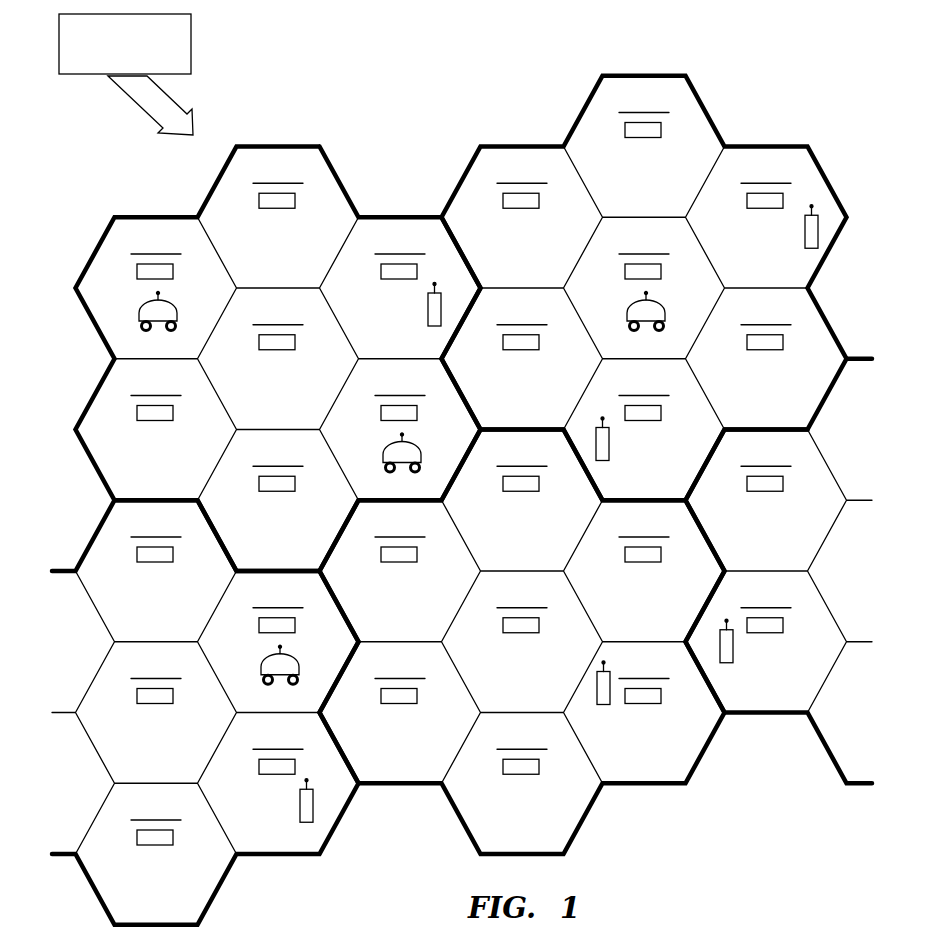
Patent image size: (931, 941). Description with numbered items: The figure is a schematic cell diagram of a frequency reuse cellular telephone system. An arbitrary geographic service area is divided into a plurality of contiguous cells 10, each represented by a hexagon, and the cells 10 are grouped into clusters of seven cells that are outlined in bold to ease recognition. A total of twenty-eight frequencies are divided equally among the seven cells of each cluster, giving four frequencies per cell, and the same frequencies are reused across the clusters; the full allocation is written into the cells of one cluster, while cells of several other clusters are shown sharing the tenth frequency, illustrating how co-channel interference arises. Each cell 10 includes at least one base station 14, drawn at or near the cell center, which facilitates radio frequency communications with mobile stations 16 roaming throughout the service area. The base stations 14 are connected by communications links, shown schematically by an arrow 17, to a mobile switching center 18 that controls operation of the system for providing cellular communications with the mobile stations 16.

The cell 10 is at (99, 276).
The base station 14 is at (767, 940).
The mobile station 16 is at (474, 527).
The arrow 17 is at (142, 107).
The mobile switching center 18 is at (192, 32).